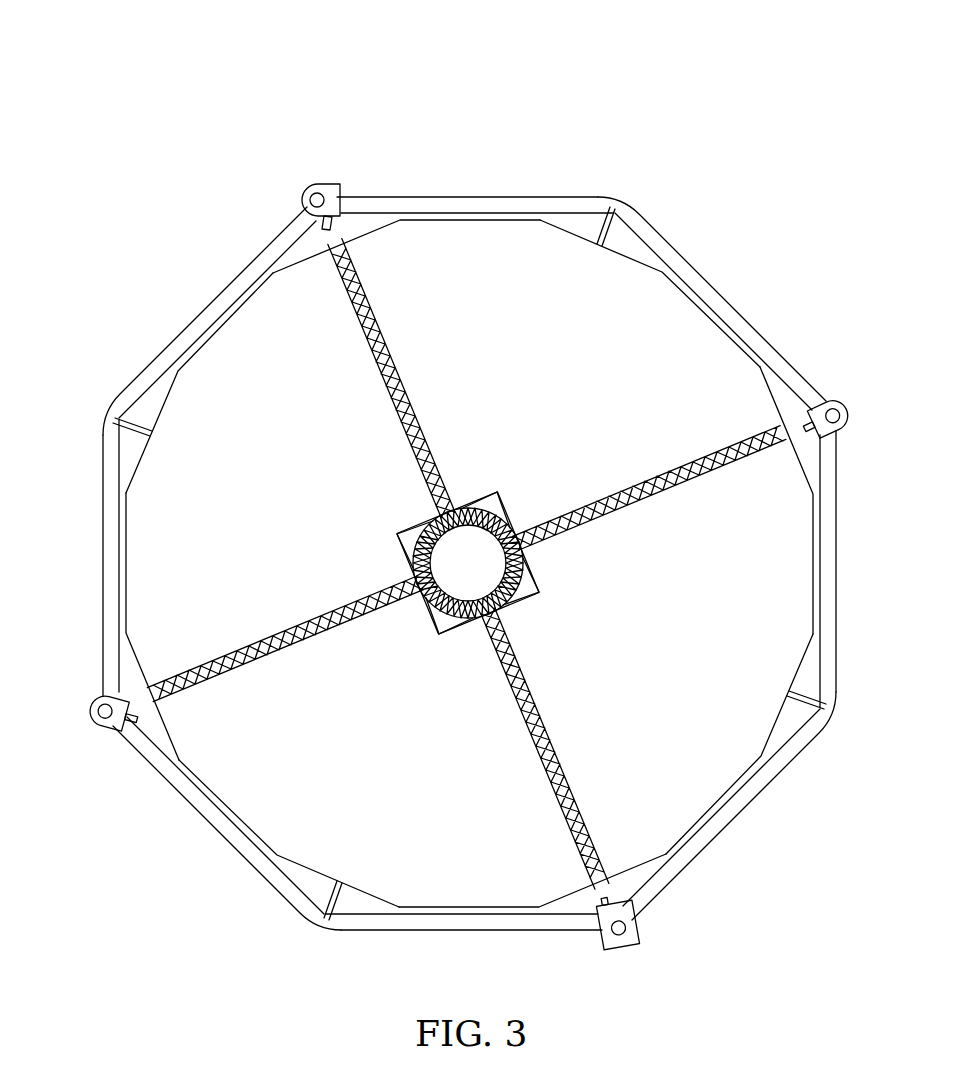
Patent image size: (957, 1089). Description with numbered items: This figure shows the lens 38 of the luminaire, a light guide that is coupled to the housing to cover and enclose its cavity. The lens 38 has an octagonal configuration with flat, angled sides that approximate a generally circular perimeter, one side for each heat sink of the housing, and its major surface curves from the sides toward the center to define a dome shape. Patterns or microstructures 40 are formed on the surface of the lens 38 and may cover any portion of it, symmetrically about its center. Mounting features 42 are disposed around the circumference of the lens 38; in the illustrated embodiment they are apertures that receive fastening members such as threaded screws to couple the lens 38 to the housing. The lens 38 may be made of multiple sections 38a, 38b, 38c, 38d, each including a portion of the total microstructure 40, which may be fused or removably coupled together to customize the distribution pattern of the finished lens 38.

The lens 38 is at (188, 70).
The section 38a is at (722, 316).
The section 38b is at (800, 728).
The section 38c is at (301, 883).
The section 38d is at (116, 560).
The microstructure 40 is at (225, 318).
The mounting feature 42 is at (306, 188).